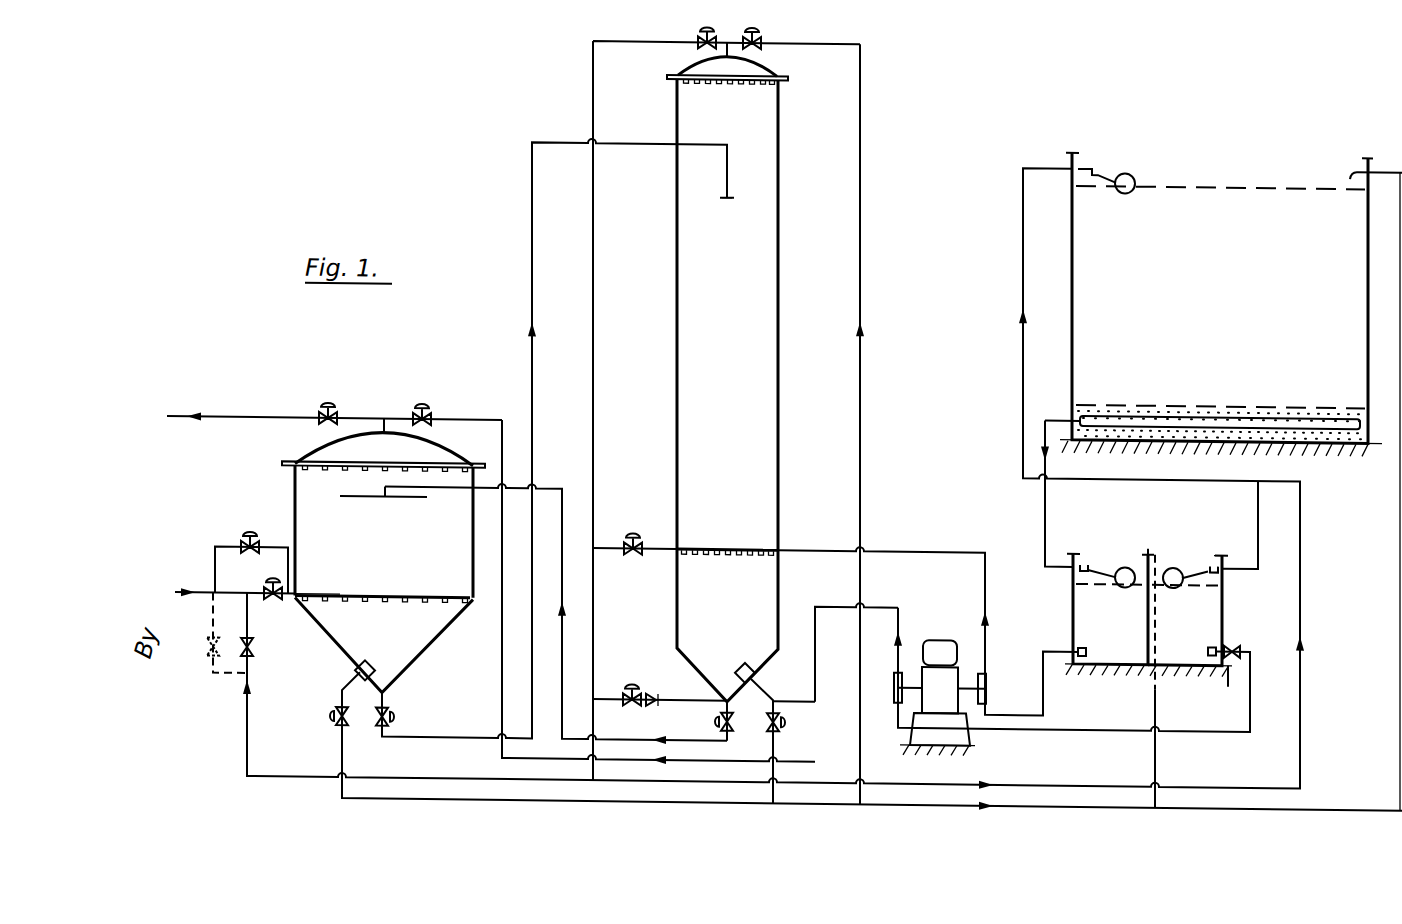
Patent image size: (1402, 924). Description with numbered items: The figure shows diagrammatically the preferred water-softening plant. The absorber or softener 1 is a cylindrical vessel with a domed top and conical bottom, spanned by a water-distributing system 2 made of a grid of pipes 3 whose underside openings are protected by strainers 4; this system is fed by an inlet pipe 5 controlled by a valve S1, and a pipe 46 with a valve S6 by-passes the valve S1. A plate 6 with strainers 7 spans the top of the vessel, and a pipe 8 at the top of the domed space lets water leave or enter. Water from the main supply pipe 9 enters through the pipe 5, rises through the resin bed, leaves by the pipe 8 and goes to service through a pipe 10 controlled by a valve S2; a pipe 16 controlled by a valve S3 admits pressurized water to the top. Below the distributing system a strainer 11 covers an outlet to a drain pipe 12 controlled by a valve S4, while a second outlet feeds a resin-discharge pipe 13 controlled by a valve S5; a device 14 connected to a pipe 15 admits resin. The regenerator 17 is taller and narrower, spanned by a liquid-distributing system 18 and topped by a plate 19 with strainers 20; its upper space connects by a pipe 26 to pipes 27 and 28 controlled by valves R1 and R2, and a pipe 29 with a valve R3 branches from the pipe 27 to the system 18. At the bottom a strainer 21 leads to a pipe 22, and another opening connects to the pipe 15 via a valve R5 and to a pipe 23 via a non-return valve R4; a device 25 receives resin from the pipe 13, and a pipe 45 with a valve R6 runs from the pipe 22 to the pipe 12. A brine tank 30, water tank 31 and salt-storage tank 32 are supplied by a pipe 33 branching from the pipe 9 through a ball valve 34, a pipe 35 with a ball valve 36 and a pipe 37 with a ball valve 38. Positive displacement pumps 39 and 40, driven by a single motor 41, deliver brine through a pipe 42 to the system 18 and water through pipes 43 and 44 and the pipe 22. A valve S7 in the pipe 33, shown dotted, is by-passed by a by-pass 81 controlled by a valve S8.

The absorber 1 is at (300, 449).
The water-distributing system 2 is at (327, 595).
The pipes 3 is at (375, 593).
The strainers 4 is at (360, 602).
The inlet pipe 5 is at (378, 645).
The plate 6 is at (455, 462).
The strainers 7 is at (320, 475).
The pipe 8 is at (384, 426).
The main supply pipe 9 is at (206, 594).
The pipe 10 is at (225, 406).
The strainer 11 is at (355, 666).
The pipe 12 is at (340, 735).
The pipe 13 is at (385, 697).
The device 14 is at (358, 494).
The pipe 15 is at (563, 482).
The pipe 16 is at (488, 413).
The regenerator 17 is at (778, 364).
The liquid-distributing system 18 is at (745, 539).
The plate 19 is at (770, 64).
The strainers 20 is at (779, 92).
The strainer 21 is at (750, 659).
The pipe 22 is at (754, 707).
The pipe 23 is at (689, 691).
The device 25 is at (730, 187).
The pipe 26 is at (712, 50).
The pipe 27 is at (594, 102).
The pipe 28 is at (862, 103).
The pipe 29 is at (660, 548).
The brine tank 30 is at (1073, 602).
The water tank 31 is at (1224, 623).
The salt-storage tank 32 is at (1072, 309).
The pipe 33 is at (247, 700).
The ball valve 34 is at (1131, 167).
The pipe 35 is at (1044, 510).
The ball valve 36 is at (1123, 564).
The pipe 37 is at (1242, 556).
The ball valve 38 is at (1178, 565).
The positive displacement pump 39 is at (986, 676).
The positive displacement pump 40 is at (897, 690).
The motor 41 is at (937, 698).
The pipe 42 is at (922, 549).
The pipe 43 is at (817, 651).
The pipe 44 is at (794, 691).
The pipe 45 is at (774, 744).
The pipe 46 is at (215, 556).
The by-pass 81 is at (210, 677).
The valve S1 is at (280, 600).
The valve S2 is at (327, 401).
The valve S3 is at (422, 402).
The valve S4 is at (331, 712).
The valve S5 is at (393, 712).
The valve S6 is at (243, 535).
The valve S7 is at (254, 656).
The valve S8 is at (205, 652).
The valve R1 is at (708, 25).
The valve R2 is at (754, 26).
The valve R3 is at (632, 530).
The non-return valve R4 is at (630, 682).
The valve R5 is at (707, 720).
The valve R6 is at (793, 721).